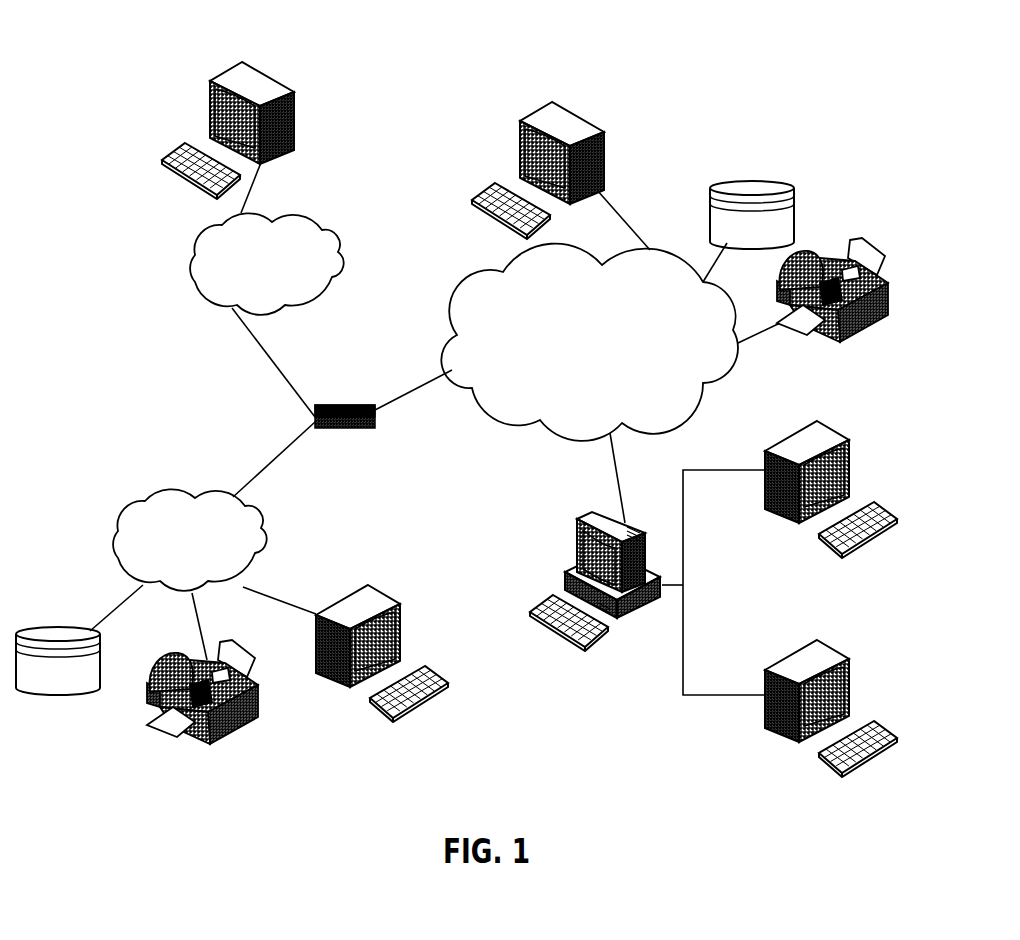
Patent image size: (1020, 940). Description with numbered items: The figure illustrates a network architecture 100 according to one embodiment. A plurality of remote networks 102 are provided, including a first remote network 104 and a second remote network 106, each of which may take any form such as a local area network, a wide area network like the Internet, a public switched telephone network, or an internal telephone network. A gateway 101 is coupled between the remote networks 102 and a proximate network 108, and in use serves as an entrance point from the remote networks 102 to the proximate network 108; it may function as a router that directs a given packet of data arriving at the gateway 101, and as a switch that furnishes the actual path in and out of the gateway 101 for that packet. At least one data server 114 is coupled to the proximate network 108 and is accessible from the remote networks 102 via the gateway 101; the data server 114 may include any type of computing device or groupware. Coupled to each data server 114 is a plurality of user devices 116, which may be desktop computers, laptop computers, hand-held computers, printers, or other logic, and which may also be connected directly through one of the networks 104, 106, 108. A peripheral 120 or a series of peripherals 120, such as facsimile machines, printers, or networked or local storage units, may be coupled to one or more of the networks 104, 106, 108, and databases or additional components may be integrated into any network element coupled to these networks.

The architecture 100 is at (137, 40).
The gateway 101 is at (330, 404).
The remote networks 102 is at (168, 331).
The first remote network 104 is at (118, 511).
The second remote network 106 is at (338, 236).
The proximate network 108 is at (698, 405).
The data server 114 is at (577, 535).
The user devices 116 is at (295, 100).
The peripheral 120 is at (793, 186).